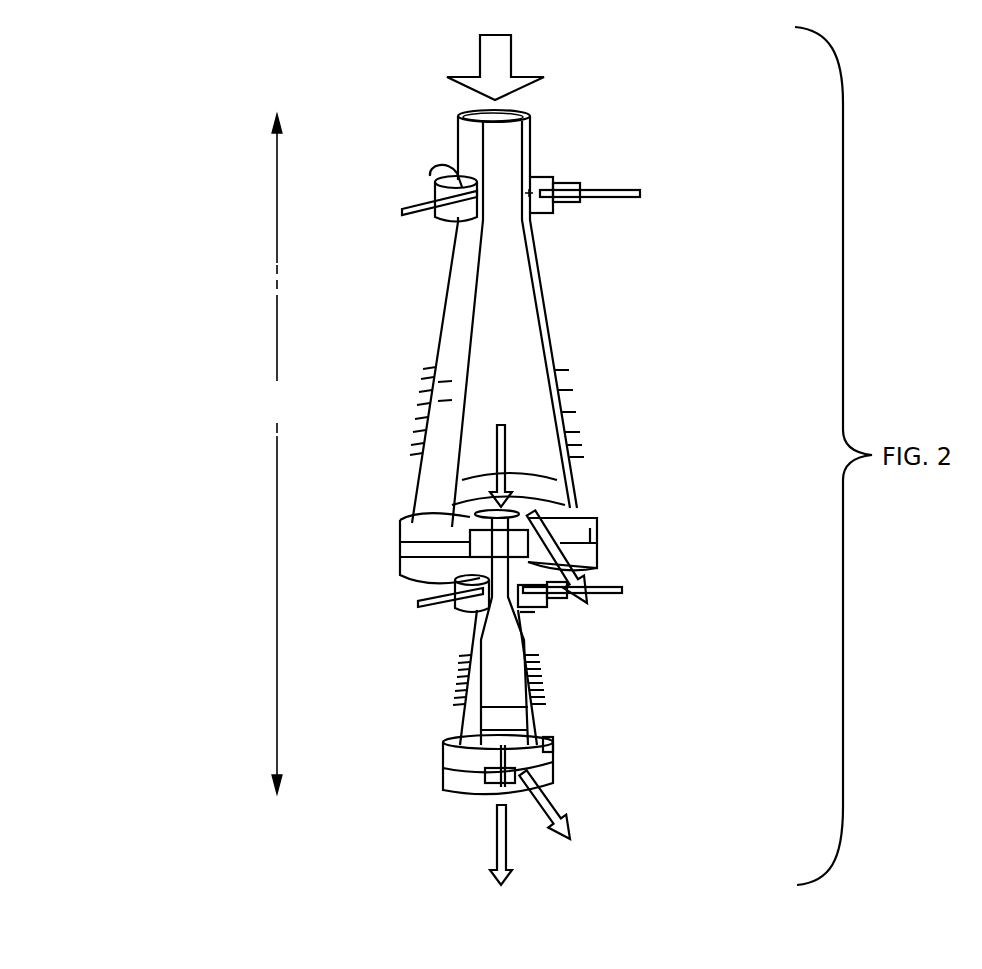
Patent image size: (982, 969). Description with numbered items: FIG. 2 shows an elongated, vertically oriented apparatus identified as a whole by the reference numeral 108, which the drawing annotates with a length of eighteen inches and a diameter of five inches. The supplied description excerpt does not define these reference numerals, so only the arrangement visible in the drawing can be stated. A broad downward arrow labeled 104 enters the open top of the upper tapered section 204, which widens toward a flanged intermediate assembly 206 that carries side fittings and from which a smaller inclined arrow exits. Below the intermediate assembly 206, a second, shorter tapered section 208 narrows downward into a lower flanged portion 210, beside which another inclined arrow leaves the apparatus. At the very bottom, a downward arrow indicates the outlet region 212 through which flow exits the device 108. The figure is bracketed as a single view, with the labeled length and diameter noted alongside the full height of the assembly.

The inlet gas flow 104 is at (480, 55).
The separator apparatus 108 is at (170, 300).
The upper conical section 204 is at (556, 299).
The intermediate flange with gas outlet 206 is at (610, 591).
The lower conical section 208 is at (566, 693).
The lower flange with liquid outlet 210 is at (577, 830).
The bottom outlet 212 is at (518, 800).